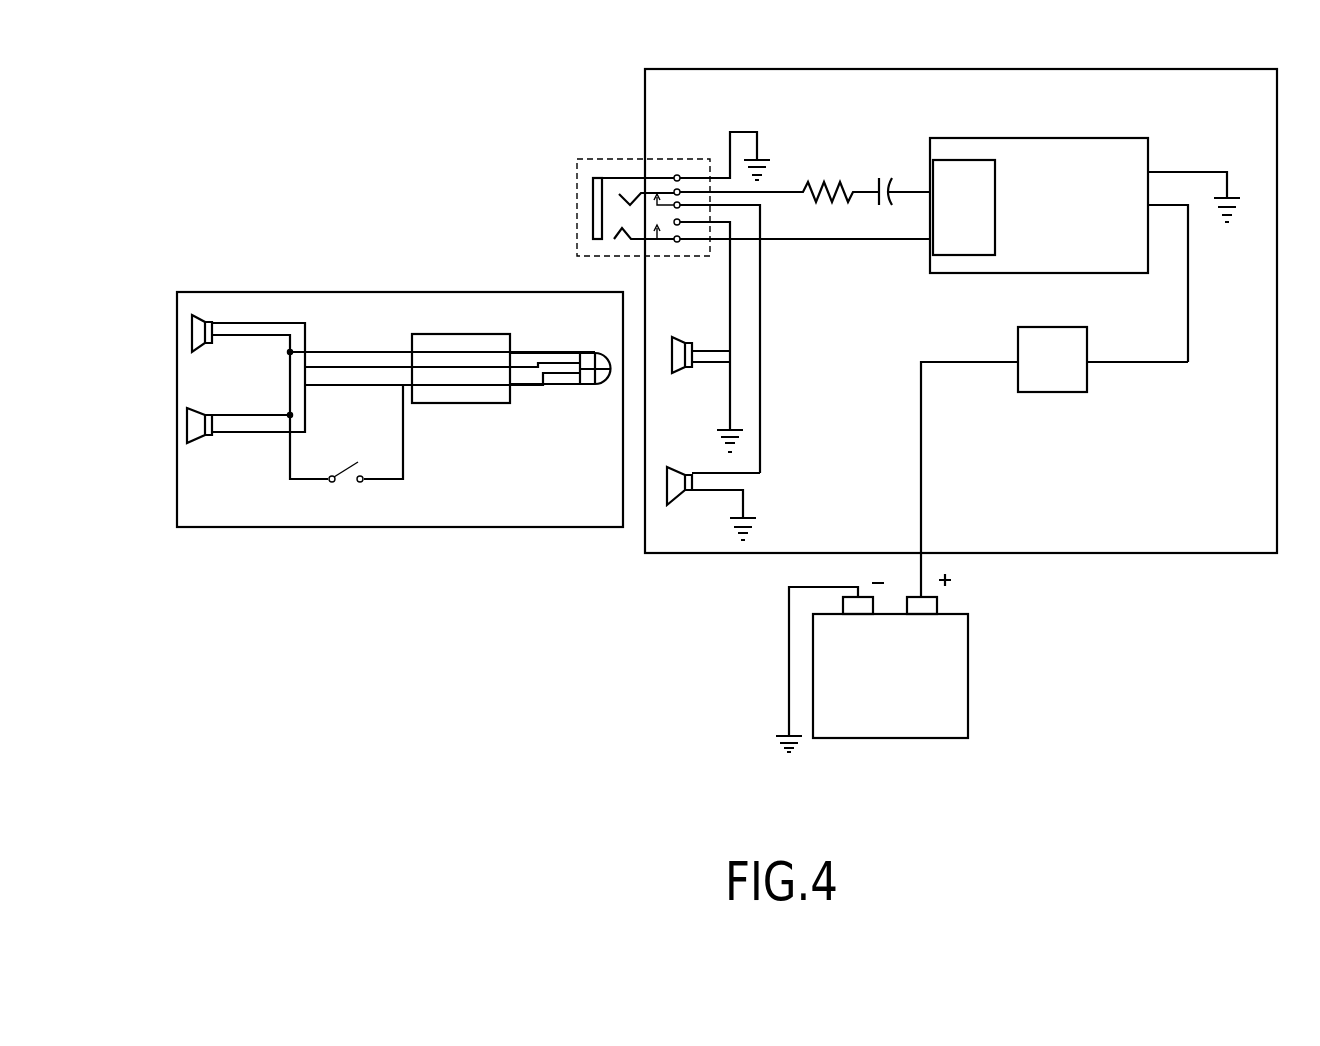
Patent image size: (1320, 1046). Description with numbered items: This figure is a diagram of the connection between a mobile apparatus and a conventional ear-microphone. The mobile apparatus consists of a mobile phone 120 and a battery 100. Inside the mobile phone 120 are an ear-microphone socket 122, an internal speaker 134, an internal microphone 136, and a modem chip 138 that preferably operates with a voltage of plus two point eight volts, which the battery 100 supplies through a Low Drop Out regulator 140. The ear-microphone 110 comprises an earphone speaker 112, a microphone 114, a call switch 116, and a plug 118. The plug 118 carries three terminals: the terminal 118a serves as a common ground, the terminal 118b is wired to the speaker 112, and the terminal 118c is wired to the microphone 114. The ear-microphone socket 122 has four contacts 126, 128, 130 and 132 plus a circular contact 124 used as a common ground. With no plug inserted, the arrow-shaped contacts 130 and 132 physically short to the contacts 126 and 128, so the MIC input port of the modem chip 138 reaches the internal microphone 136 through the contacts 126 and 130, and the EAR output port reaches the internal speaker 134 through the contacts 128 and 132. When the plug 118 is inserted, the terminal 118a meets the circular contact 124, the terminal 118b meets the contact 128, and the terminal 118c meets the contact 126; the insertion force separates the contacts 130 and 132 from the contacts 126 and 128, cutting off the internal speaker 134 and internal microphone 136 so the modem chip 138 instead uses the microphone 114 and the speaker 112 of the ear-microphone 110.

The battery 100 is at (968, 677).
The ear-microphone 110 is at (400, 419).
The earphone speaker 112 is at (198, 313).
The microphone 114 is at (200, 443).
The call switch 116 is at (340, 468).
The plug 118 is at (517, 408).
The terminal 118a is at (543, 390).
The terminal 118b is at (587, 390).
The terminal 118c is at (606, 392).
The mobile phone 120 is at (960, 68).
The ear-microphone socket 122 is at (614, 186).
The circular contact 124 is at (592, 178).
The contact 126 is at (622, 187).
The contact 128 is at (620, 240).
The contact 130 is at (658, 183).
The contact 132 is at (660, 262).
The internal speaker 134 is at (687, 340).
The internal microphone 136 is at (682, 467).
The modem chip 138 is at (1088, 135).
The Low Drop Out (LDO) regulator 140 is at (1053, 327).